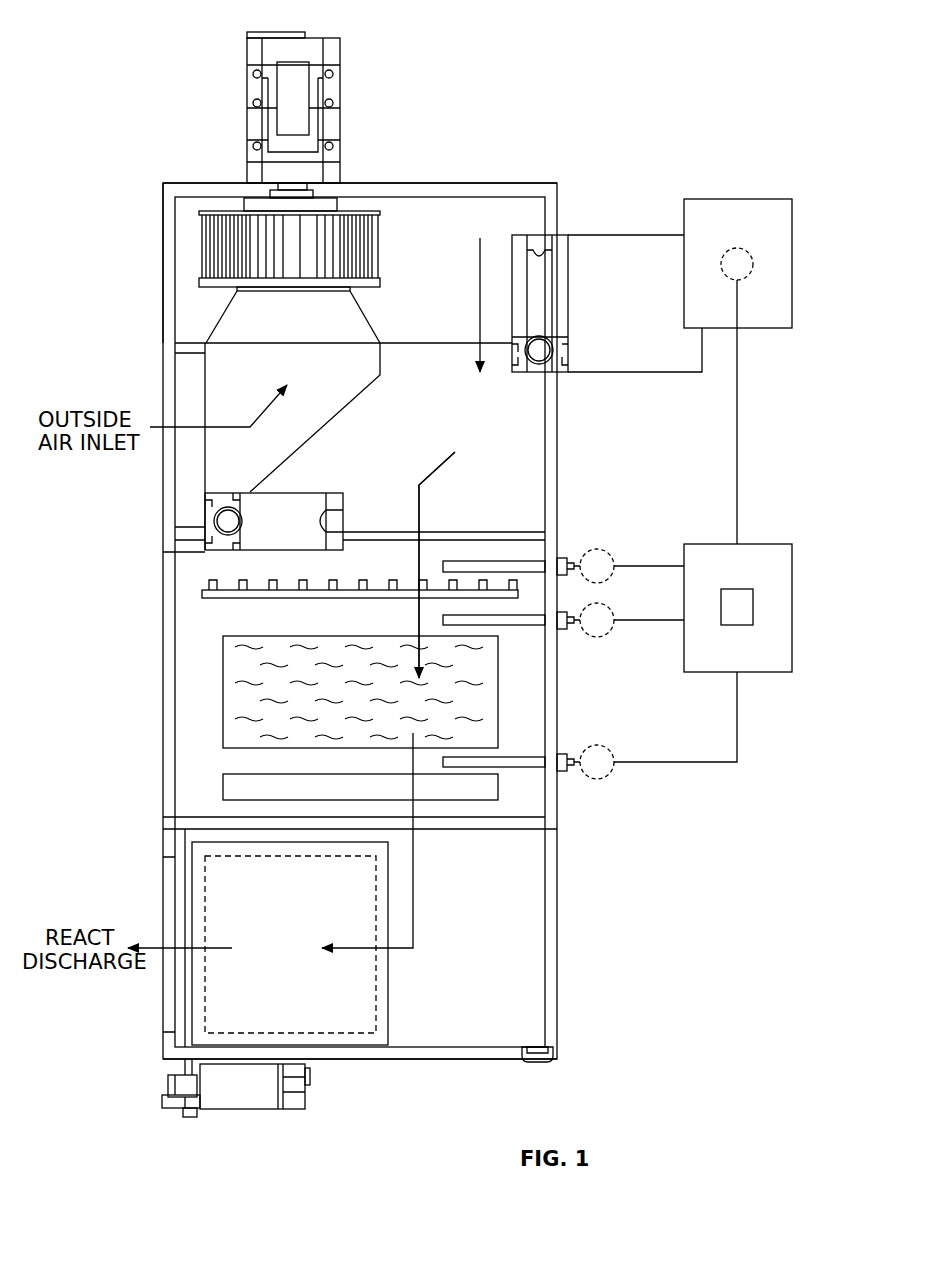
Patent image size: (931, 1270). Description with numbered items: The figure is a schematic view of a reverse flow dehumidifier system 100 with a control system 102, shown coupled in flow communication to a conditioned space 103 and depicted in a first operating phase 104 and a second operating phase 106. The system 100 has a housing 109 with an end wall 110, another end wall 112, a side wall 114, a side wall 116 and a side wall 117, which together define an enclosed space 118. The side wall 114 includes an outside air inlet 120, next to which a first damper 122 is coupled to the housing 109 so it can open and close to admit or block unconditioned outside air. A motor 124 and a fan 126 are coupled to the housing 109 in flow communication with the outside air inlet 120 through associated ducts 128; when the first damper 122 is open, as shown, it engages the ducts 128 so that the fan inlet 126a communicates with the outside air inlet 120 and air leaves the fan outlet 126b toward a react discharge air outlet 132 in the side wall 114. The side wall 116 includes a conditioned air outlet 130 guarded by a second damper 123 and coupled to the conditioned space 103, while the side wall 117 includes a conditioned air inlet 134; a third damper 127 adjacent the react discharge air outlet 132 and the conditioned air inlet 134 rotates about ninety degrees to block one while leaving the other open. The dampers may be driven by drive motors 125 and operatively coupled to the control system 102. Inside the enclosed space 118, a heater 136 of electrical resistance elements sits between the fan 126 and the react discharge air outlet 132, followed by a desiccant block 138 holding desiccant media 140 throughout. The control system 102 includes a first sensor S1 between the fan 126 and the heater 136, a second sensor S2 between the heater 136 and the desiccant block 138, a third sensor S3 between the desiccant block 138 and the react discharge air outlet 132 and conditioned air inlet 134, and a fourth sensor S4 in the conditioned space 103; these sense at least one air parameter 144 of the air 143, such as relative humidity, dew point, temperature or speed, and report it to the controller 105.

The reverse flow dehumidifier system 100 is at (708, 62).
The control system 102 is at (780, 579).
The conditioned space 103 is at (741, 343).
The first operating phase 104 is at (410, 252).
The controller 105 is at (755, 608).
The second operating phase 106 is at (413, 762).
The housing 109 is at (195, 183).
The end wall 110 is at (500, 183).
The end wall 112 is at (470, 1060).
The side wall 114 is at (163, 195).
The side wall 116 is at (562, 194).
The side wall 117 is at (337, 938).
The enclosed space 118 is at (364, 444).
The outside air inlet 120 is at (195, 405).
The first damper 122 is at (283, 462).
The second damper 123 is at (547, 305).
The motor 124 is at (290, 95).
The drive motors 125 is at (205, 508).
The fan 126 is at (337, 215).
The fan inlet 126a is at (262, 291).
The fan outlet 126b is at (380, 265).
The third damper 127 is at (188, 1010).
The ducts 128 is at (210, 318).
The conditioned air outlet 130 is at (570, 280).
The react discharge air outlet 132 is at (165, 895).
The conditioned air inlet 134 is at (376, 970).
The heater 136 is at (240, 585).
The desiccant block 138 is at (289, 673).
The desiccant media 140 is at (265, 700).
The air 143 is at (548, 565).
The air parameter 144 is at (437, 470).
The first sensor S1 is at (563, 566).
The second sensor S2 is at (563, 620).
The third sensor S3 is at (590, 725).
The fourth sensor S4 is at (737, 264).